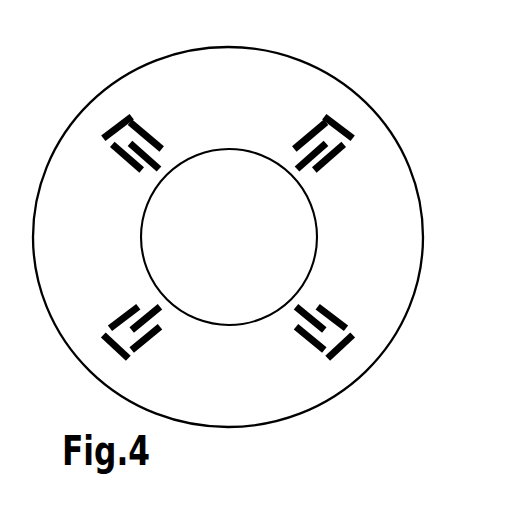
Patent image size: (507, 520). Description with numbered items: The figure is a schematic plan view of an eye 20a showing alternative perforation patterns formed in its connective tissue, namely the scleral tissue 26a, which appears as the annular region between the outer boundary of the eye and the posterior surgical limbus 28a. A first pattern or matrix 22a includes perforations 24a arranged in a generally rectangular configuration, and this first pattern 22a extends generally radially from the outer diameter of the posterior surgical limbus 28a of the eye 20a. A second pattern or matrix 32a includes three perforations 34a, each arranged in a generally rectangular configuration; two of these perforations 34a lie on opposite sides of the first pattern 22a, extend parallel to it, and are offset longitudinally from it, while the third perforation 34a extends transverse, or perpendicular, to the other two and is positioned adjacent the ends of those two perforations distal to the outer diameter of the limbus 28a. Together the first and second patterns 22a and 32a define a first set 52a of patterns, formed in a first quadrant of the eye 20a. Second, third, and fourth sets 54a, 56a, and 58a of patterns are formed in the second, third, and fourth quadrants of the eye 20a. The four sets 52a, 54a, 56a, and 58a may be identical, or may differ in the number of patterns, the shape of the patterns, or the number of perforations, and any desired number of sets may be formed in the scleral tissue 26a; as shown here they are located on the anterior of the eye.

The eye 20a is at (338, 49).
The first pattern or matrix 22a is at (277, 178).
The perforations 24a is at (309, 158).
The scleral tissue 26a is at (80, 290).
The posterior surgical limbus 28a is at (316, 266).
The second pattern or matrix 32a is at (279, 130).
The perforations 34a is at (329, 134).
The first set of patterns or matrices 52a is at (292, 116).
The second set of patterns or matrices 54a is at (310, 375).
The third set of patterns or matrices 56a is at (152, 362).
The fourth set of patterns or matrices 58a is at (100, 160).